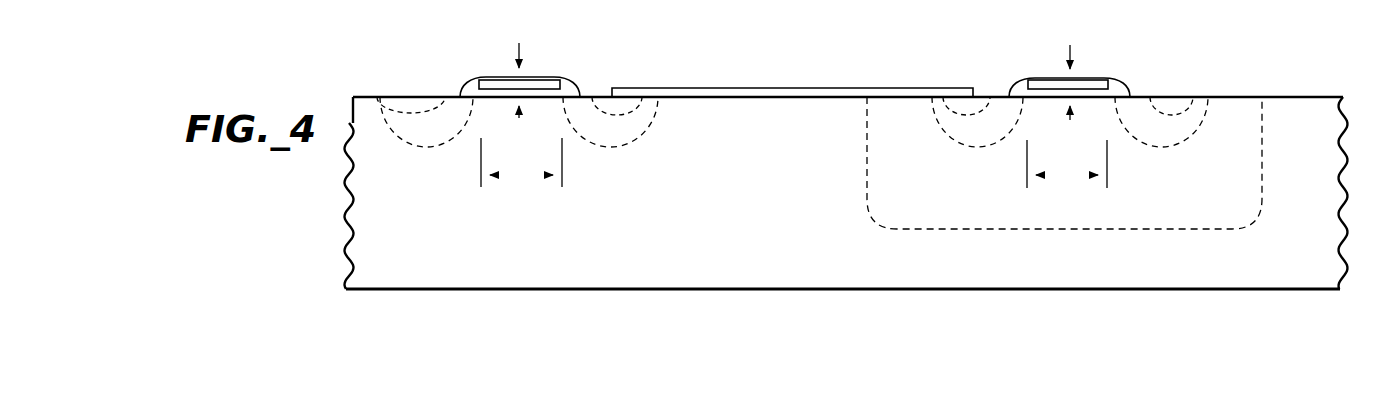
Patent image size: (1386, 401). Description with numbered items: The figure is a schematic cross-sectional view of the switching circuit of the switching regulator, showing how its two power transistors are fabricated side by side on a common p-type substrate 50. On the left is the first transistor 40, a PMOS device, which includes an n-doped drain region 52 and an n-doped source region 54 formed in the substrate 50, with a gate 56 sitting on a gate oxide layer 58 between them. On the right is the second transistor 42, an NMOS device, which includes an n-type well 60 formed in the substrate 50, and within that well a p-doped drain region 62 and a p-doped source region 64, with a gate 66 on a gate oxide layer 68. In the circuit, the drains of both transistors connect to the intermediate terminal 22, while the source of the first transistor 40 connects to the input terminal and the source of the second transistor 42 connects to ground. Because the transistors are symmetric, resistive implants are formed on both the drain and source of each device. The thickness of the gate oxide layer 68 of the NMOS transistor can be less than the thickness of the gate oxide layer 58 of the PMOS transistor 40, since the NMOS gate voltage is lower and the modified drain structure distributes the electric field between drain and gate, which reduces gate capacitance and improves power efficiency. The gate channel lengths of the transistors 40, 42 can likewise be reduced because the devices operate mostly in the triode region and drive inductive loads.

The intermediate terminal 22 is at (705, 88).
The first transistor 40 is at (510, 97).
The second transistor 42 is at (1067, 97).
The p-type substrate 50 is at (706, 217).
The n-doped drain region 52 is at (647, 97).
The n-doped source region 54 is at (390, 97).
The gate 56 is at (493, 77).
The gate oxide layer 58 is at (574, 86).
The n-type well 60 is at (1266, 128).
The p-doped drain region 62 is at (937, 97).
The p-doped source region 64 is at (1200, 97).
The gate 66 is at (1040, 78).
The gate oxide layer 68 is at (1124, 88).